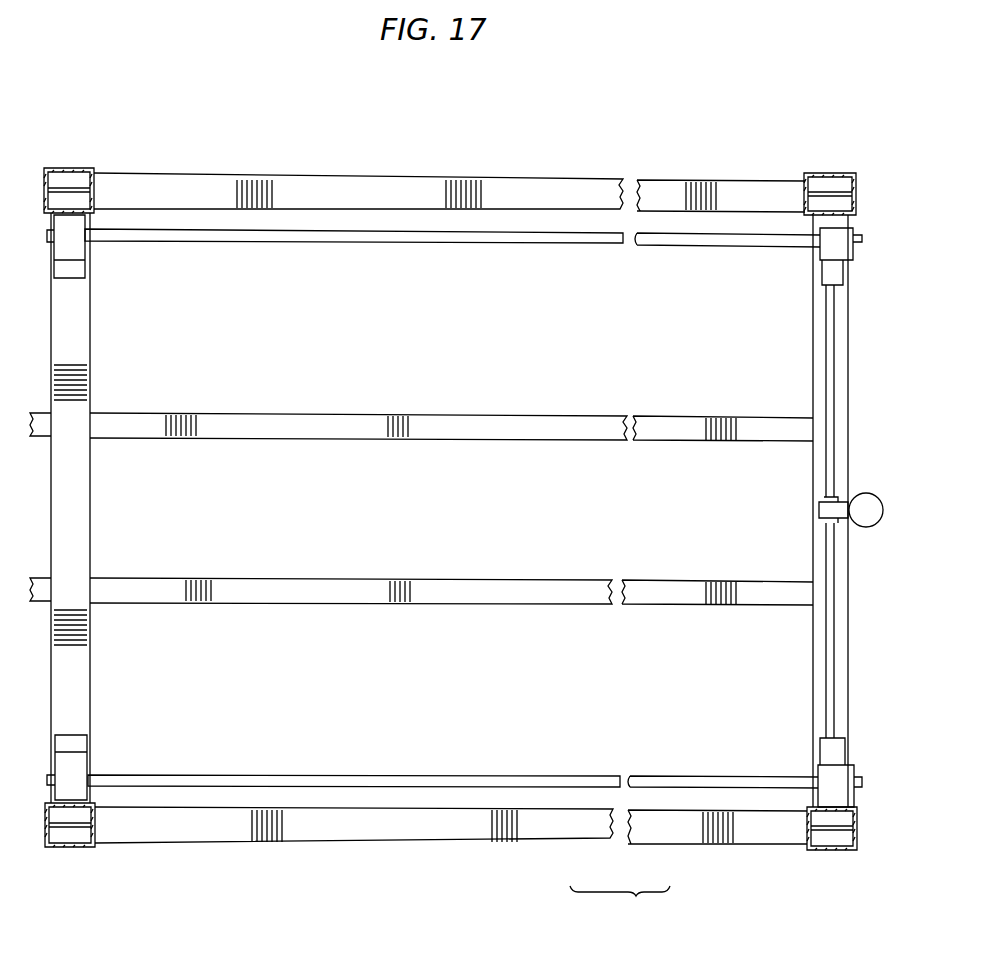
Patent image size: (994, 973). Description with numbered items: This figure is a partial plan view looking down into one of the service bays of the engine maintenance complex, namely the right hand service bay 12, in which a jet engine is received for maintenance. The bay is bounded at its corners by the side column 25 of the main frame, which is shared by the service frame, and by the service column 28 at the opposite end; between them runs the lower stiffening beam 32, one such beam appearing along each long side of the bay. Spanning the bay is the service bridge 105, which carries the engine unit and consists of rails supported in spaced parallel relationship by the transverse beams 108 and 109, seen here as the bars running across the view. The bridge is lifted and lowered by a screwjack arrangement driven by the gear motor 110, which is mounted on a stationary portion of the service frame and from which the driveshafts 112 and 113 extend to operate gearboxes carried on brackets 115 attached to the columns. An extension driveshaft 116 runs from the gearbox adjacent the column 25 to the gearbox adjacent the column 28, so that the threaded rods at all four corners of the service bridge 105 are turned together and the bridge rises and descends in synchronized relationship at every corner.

The service bay 12 is at (444, 518).
The side column 25 is at (73, 848).
The service column 28 is at (828, 850).
The second lower stiffening beam 32 is at (481, 180).
The service bridge 105 is at (612, 380).
The transverse beam 108 is at (77, 705).
The transverse beam 109 is at (815, 708).
The gear motor 110 is at (867, 500).
The driveshaft 112 is at (832, 362).
The driveshaft 113 is at (833, 653).
The bracket 115 is at (820, 274).
The extension driveshaft 116 is at (315, 233).